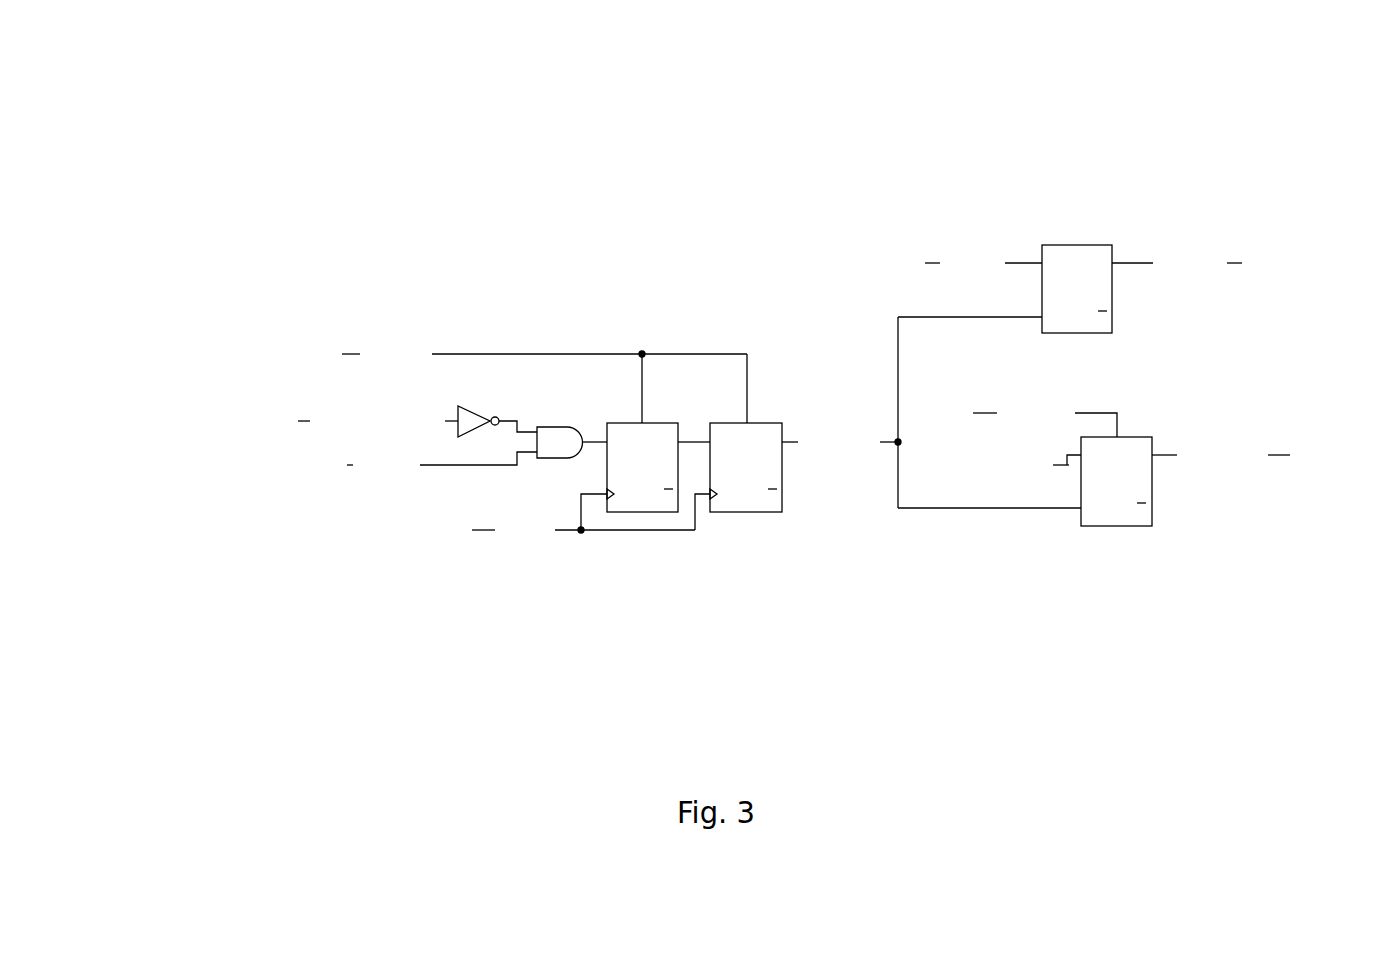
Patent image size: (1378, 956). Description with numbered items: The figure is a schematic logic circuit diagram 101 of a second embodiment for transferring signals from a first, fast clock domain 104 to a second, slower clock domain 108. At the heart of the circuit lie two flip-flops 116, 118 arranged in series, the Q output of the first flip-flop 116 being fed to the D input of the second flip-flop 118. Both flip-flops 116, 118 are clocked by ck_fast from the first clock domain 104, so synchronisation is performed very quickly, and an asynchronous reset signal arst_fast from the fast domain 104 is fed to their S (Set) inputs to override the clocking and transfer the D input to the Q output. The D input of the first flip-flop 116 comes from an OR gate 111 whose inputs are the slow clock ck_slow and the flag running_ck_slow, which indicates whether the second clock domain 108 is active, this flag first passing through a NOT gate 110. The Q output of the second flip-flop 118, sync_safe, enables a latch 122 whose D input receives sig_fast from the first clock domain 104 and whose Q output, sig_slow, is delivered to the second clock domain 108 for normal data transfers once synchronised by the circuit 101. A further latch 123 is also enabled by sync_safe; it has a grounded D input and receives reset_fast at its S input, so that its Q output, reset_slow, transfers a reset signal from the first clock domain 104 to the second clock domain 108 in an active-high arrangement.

The schematic logic circuit diagram 101 is at (623, 237).
The first clock domain 104 is at (342, 354).
The second clock domain 108 is at (347, 463).
The NOT gate 110 is at (468, 407).
The OR gate 111 is at (550, 427).
The first flip-flop 116 is at (635, 512).
The second flip-flop 118 is at (745, 512).
The latch 122 is at (1077, 247).
The further latch 123 is at (1102, 526).